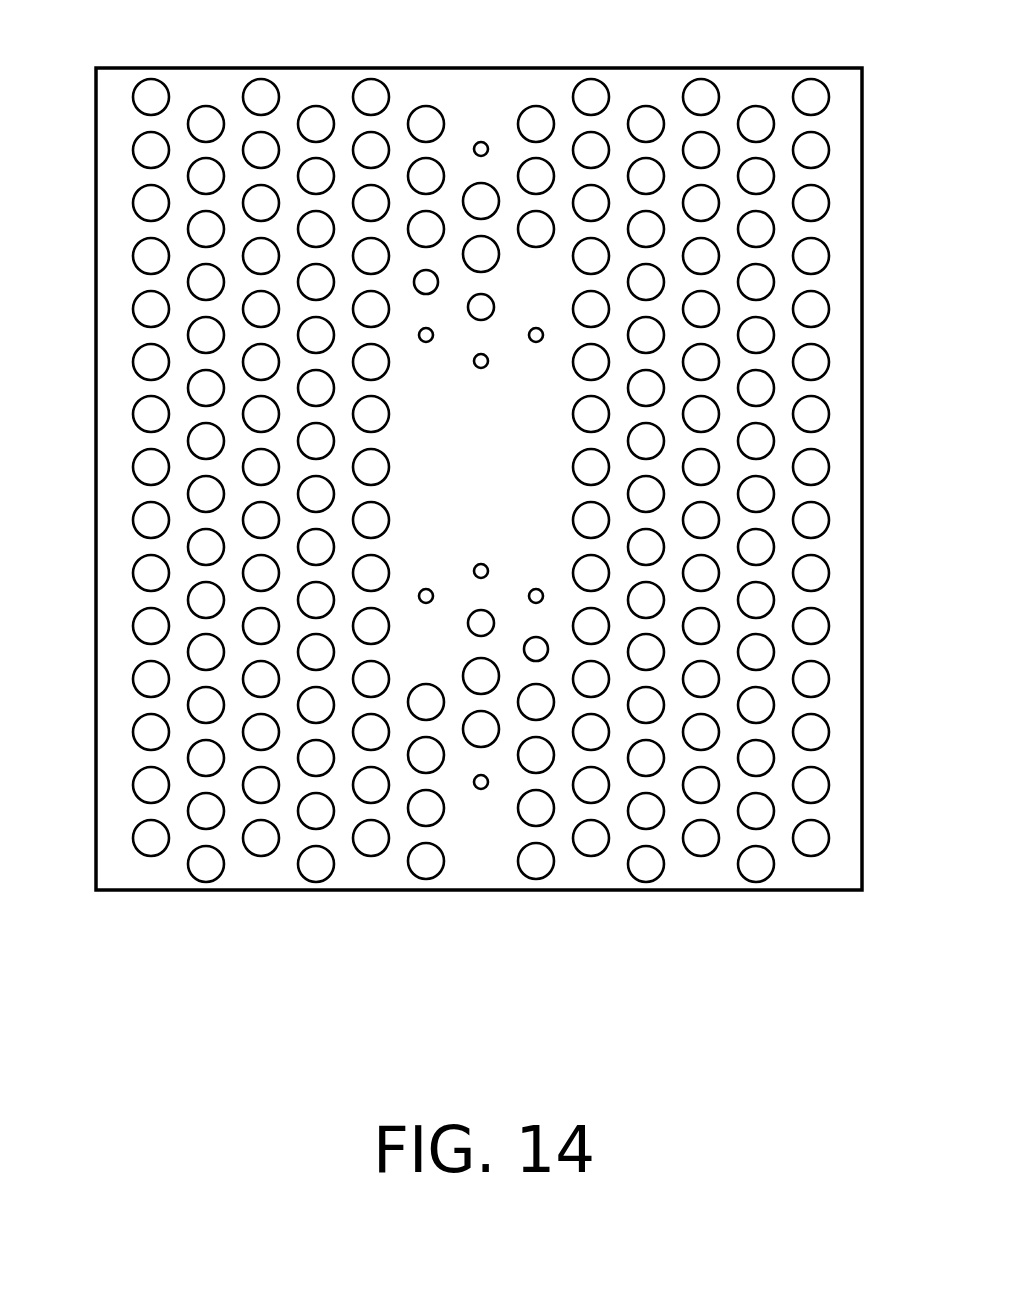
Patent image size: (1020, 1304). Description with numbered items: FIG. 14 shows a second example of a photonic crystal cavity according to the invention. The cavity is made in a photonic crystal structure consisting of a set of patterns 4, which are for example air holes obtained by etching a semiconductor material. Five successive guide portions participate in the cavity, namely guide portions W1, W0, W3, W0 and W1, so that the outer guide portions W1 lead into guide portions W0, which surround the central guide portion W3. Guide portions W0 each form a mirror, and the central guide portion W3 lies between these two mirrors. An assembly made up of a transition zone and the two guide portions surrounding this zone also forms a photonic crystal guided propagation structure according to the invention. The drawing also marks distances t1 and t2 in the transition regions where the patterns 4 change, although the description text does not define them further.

The patterns 4 is at (818, 150).
The first dot pitch / distance t1 is at (428, 283).
The second dot pitch / distance t2 is at (430, 338).
The guide portion W0 is at (483, 227).
The guide portion W1 is at (478, 112).
The guide portion W3 is at (507, 480).